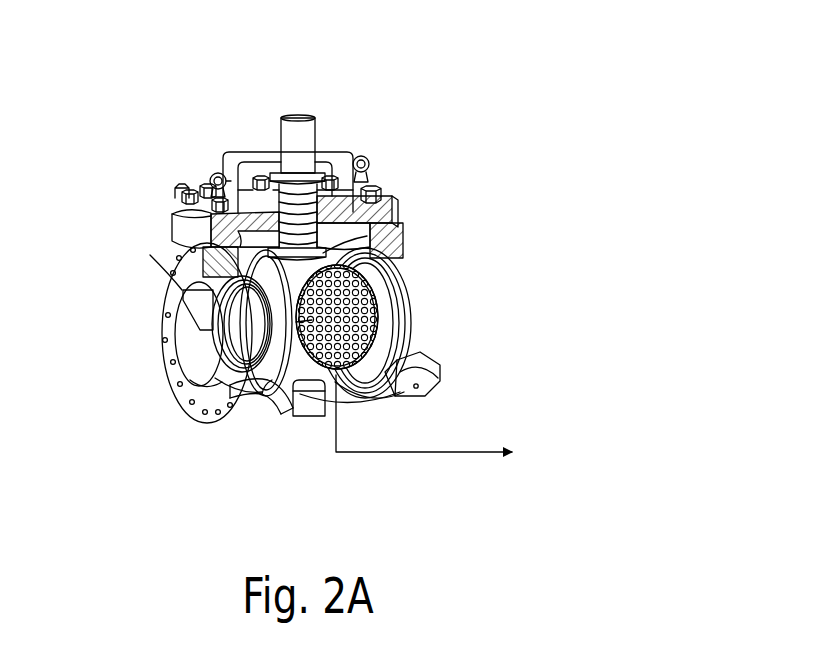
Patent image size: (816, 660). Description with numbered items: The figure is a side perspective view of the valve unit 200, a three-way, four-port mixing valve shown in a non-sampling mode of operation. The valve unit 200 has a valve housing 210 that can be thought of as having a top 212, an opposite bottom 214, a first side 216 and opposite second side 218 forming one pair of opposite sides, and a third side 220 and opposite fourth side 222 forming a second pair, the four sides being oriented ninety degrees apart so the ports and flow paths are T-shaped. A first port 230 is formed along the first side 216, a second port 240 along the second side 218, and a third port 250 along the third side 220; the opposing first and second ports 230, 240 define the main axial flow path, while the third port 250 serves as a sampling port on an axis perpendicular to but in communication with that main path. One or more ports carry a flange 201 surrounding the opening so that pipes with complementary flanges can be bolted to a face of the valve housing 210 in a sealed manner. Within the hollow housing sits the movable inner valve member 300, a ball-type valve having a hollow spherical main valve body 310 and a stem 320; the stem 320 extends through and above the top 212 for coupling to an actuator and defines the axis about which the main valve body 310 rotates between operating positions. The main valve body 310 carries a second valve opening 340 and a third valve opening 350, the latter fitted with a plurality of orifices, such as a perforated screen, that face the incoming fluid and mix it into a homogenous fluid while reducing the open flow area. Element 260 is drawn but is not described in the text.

The valve unit 200 is at (387, 117).
The flange 201 is at (195, 408).
The valve housing 210 is at (399, 202).
The top 212 is at (181, 186).
The bottom 214 is at (290, 415).
The first side 216 is at (182, 228).
The second side 218 is at (405, 240).
The third side 220 is at (214, 174).
The fourth side 222 is at (418, 390).
The first port 230 is at (186, 334).
The second port 240 is at (228, 356).
The third port 250 is at (182, 196).
The elbow 260 is at (272, 397).
The inner valve member 300 is at (413, 318).
The main valve body 310 is at (396, 266).
The stem 320 is at (298, 99).
The second valve opening 340 is at (395, 265).
The third valve opening 350 is at (300, 327).